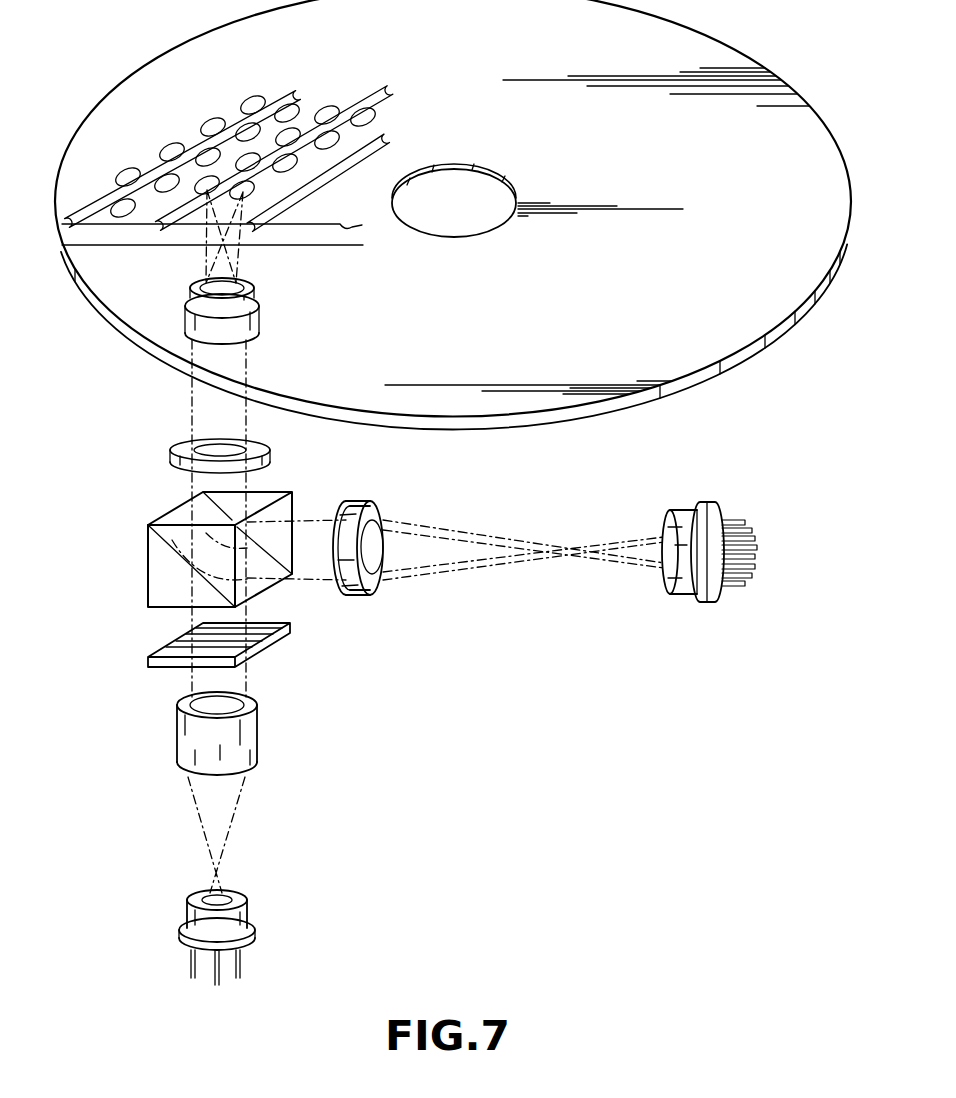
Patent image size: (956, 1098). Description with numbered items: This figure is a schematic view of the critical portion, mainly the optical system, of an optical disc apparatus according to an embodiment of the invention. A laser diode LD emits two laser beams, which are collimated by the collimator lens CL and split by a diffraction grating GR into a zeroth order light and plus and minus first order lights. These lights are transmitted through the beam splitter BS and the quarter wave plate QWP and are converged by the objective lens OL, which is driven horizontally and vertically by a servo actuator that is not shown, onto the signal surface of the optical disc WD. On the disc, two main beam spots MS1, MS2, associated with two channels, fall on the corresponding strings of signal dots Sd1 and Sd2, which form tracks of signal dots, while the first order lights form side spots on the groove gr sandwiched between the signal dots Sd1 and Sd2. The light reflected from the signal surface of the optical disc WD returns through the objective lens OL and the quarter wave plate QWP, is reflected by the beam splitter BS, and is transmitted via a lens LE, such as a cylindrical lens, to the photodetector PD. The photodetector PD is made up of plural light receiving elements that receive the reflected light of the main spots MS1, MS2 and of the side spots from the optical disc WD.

The optical disc WD is at (723, 335).
The groove gr is at (293, 103).
The string of signal dots Sd1 is at (255, 98).
The string of signal dots Sd2 is at (293, 110).
The main beam spot MS1 is at (203, 188).
The main beam spot MS2 is at (248, 191).
The objective lens OL is at (187, 328).
The quarter wave plate QWP is at (168, 458).
The beam splitter BS is at (152, 567).
The lens LE is at (362, 598).
The photodetector PD is at (682, 595).
The diffraction grating GR is at (257, 648).
The collimator lens CL is at (245, 747).
The laser diode LD is at (247, 915).